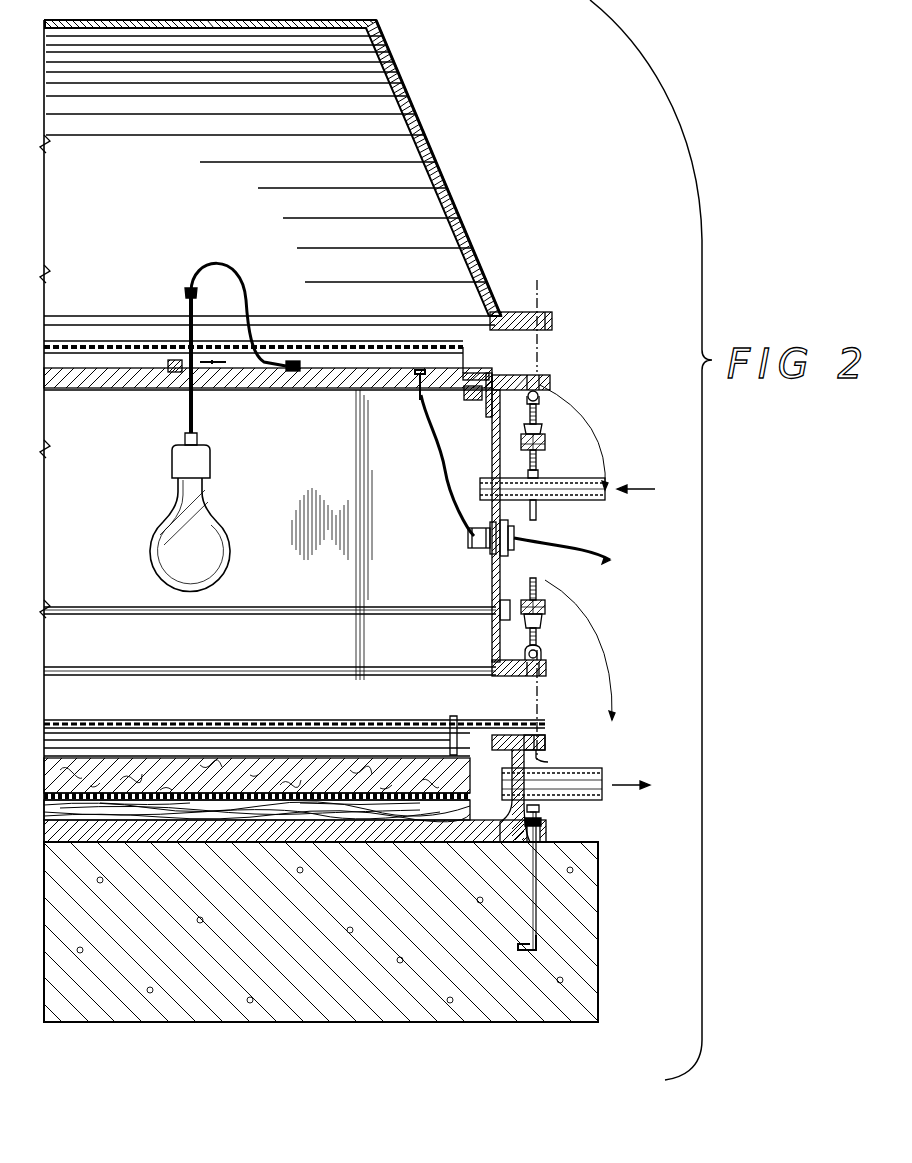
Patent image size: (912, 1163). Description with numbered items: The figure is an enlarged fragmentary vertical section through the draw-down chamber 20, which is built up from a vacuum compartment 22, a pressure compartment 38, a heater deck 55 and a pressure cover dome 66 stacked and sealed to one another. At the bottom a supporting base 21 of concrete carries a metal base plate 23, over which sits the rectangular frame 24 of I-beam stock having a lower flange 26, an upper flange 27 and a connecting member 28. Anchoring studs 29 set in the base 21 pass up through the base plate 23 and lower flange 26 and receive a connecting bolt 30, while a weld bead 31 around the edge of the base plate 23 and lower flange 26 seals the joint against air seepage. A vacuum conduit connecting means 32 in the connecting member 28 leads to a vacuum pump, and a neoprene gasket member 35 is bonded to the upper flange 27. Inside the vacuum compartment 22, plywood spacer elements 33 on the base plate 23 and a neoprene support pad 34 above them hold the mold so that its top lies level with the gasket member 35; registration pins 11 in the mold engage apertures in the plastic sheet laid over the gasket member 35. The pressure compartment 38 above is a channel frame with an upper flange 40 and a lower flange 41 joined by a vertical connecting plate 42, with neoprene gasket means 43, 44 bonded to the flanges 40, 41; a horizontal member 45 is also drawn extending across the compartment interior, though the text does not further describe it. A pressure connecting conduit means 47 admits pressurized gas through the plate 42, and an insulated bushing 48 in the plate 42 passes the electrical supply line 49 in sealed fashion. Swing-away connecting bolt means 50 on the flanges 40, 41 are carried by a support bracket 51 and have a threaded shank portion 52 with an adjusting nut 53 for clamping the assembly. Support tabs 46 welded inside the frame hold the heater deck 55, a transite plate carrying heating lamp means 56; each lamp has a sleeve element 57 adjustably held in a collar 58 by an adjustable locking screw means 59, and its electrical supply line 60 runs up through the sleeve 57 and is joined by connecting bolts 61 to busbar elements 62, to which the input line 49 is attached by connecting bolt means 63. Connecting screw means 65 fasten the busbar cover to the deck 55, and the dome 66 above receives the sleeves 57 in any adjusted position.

The registration pins 11 is at (450, 726).
The draw-down chamber 20 is at (298, 175).
The supporting base 21 is at (596, 968).
The vacuum compartment 22 is at (460, 740).
The base plate 23 is at (540, 858).
The rectangular frame 24 is at (563, 670).
The lower flange 26 is at (540, 822).
The upper flange 27 is at (546, 752).
The connecting member 28 is at (514, 740).
The anchoring studs 29 is at (540, 932).
The connecting bolt 30 is at (540, 808).
The weld bead 31 is at (540, 834).
The vacuum conduit connecting means 32 is at (604, 770).
The plywood spacer elements 33 is at (82, 770).
The neoprene support pad 34 is at (140, 790).
The neoprene gasket member 35 is at (546, 740).
The pressure compartment 38 is at (264, 642).
The upper flange 40 is at (546, 390).
The lower flange 41 is at (548, 668).
The vertical connecting plate 42 is at (491, 584).
The neoprene gasket means 43 is at (522, 471).
The neoprene gasket means 44 is at (540, 676).
The upper rod 45 is at (304, 606).
The support tabs 46 is at (476, 402).
The pressure connecting conduit means 47 is at (586, 480).
The insulated bushing 48 is at (512, 530).
The electrical supply line 49 is at (590, 552).
The swing-away connecting bolt means 50 is at (548, 426).
The support bracket 51 is at (545, 398).
The threaded shank portion 52 is at (530, 468).
The adjusting nut 53 is at (548, 442).
The heater deck 55 is at (290, 382).
The heating lamp means 56 is at (218, 518).
The sleeve element 57 is at (180, 298).
The collars 58 is at (170, 378).
The adjustable locking screw means 59 is at (228, 378).
The electrical supply line 60 is at (240, 275).
The connecting bolts 61 is at (298, 360).
The busbar elements 62 is at (416, 392).
The connecting bolt means 63 is at (420, 368).
The connecting screw means 65 is at (482, 373).
The pressure cover dome 66 is at (412, 108).